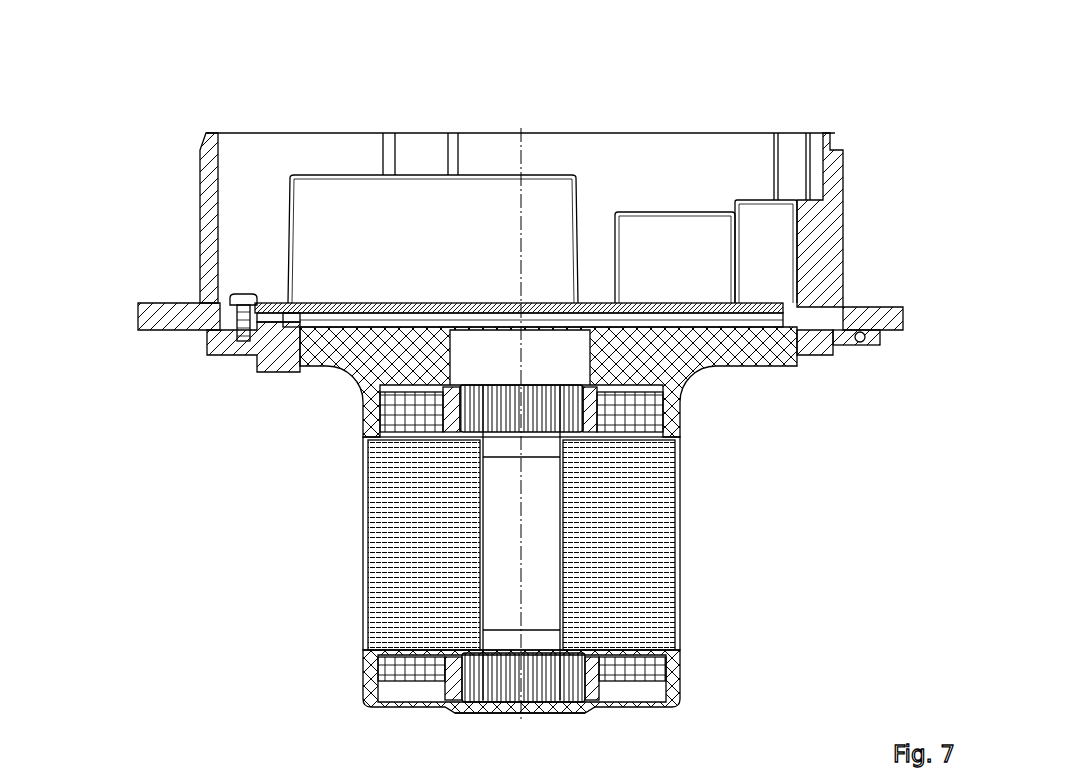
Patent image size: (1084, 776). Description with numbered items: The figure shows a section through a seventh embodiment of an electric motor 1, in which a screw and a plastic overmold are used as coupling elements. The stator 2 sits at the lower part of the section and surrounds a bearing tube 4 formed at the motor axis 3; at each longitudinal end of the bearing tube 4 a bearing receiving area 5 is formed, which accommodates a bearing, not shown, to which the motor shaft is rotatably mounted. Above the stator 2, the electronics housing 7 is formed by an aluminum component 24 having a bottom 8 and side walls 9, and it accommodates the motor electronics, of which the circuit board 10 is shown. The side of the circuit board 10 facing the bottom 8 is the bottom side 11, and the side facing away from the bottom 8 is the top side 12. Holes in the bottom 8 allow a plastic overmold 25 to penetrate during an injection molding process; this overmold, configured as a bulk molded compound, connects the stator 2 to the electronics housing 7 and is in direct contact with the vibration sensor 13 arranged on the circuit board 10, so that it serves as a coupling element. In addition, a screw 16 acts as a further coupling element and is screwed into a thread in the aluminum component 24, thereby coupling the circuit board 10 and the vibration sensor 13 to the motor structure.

The electric motor 1 is at (103, 138).
The stator 2 is at (395, 525).
The motor axis 3 is at (520, 716).
The bearing tube 4 is at (556, 582).
The bearing receiving area 5 is at (575, 412).
The electronics housing 7 is at (247, 150).
The bottom 8 is at (292, 352).
The side walls 9 is at (207, 197).
The circuit board 10 is at (786, 312).
The bottom side 11 is at (768, 322).
The top side 12 is at (768, 300).
The vibration sensor 13 is at (278, 305).
The screw 16 is at (240, 292).
The aluminum component 24 is at (200, 318).
The plastic overmold 25 is at (360, 330).